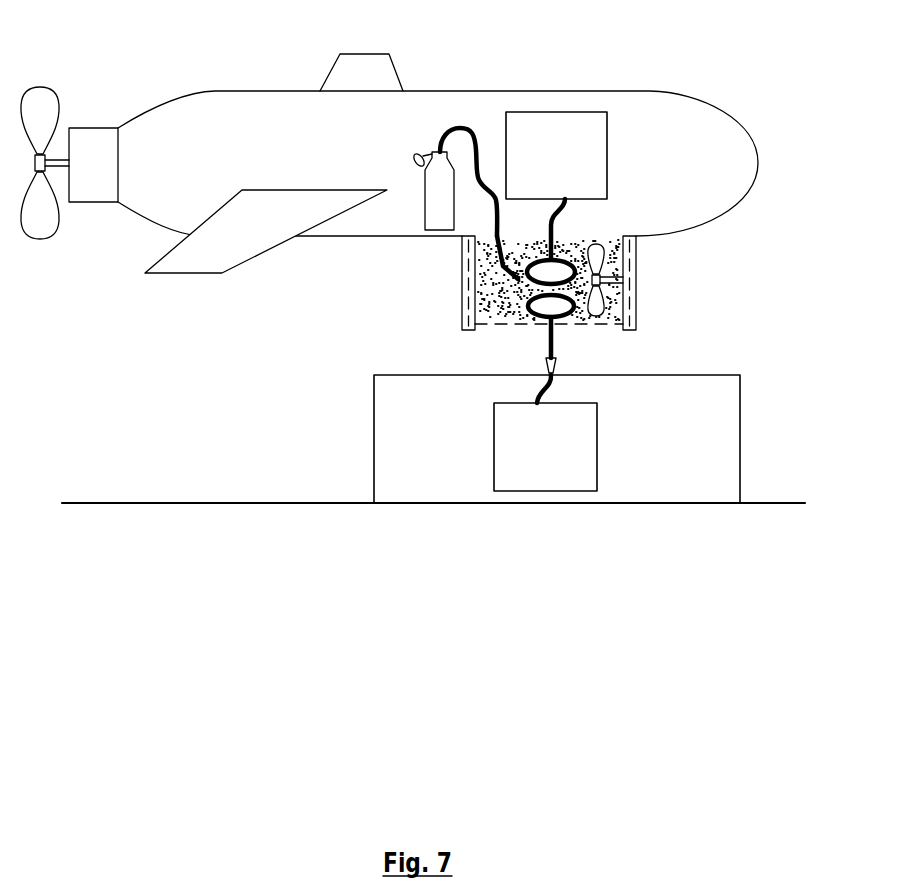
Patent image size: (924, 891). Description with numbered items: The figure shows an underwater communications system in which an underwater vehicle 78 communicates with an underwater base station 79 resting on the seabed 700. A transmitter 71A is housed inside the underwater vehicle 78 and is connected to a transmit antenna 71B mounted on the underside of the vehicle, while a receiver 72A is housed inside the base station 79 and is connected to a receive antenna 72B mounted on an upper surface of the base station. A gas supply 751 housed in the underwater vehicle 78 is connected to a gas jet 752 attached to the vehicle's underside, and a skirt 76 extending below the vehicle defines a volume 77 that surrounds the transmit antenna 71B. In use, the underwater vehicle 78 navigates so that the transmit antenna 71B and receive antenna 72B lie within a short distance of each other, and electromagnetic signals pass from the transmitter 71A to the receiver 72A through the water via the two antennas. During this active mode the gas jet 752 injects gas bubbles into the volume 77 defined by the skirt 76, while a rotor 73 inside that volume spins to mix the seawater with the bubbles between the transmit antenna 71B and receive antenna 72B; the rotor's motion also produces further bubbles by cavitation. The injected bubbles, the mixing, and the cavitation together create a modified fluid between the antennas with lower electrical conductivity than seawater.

The underwater vehicle 78 is at (213, 92).
The gas supply 751 is at (423, 183).
The gas jet 752 is at (477, 245).
The transmitter 71A is at (556, 185).
The transmit antenna 71B is at (565, 257).
The receiver 72A is at (545, 424).
The receive antenna 72B is at (563, 320).
The skirt 76 is at (637, 250).
The rotor 73 is at (602, 290).
The volume 77 is at (506, 326).
The underwater base station 79 is at (373, 412).
The seabed 700 is at (262, 505).